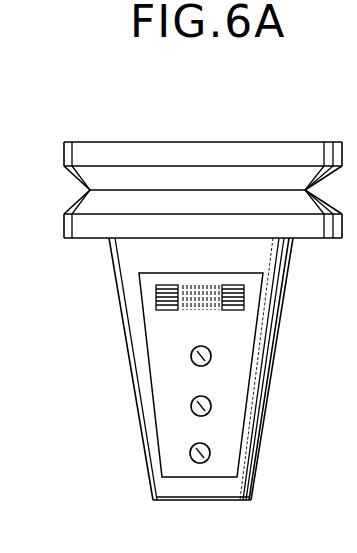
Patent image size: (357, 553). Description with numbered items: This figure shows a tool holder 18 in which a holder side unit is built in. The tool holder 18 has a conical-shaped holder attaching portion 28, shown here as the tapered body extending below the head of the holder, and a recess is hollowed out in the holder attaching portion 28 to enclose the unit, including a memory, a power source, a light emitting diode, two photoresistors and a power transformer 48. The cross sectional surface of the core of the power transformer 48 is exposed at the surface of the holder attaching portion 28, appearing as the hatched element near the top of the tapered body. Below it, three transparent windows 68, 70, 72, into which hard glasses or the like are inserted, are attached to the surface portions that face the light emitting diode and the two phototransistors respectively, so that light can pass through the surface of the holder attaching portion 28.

The tool holder 18 is at (80, 134).
The holder attaching portion 28 is at (145, 413).
The power transformer 48 is at (244, 298).
The transparent window 68 is at (211, 358).
The transparent window 70 is at (211, 408).
The transparent window 72 is at (211, 455).